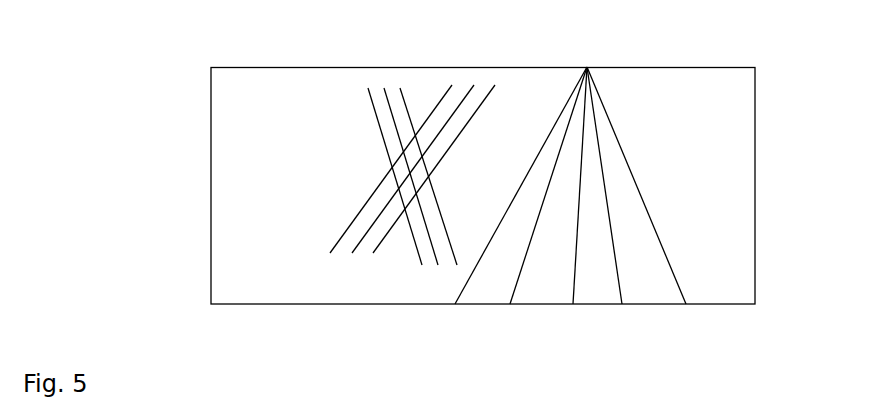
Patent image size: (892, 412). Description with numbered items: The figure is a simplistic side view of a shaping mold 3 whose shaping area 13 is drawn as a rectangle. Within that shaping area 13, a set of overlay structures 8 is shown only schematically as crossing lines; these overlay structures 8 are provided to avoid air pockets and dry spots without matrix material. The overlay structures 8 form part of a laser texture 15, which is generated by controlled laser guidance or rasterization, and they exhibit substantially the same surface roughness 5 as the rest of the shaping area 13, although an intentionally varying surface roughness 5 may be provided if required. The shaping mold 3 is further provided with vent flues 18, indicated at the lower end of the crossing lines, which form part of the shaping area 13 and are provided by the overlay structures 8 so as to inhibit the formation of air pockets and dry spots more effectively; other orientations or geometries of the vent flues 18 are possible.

The shaping mold 3 is at (211, 85).
The shaping area 13 is at (305, 146).
The surface roughness 5 is at (282, 216).
The laser texture 15 is at (307, 265).
The overlay structures 8 is at (358, 80).
The vent flues 18 is at (417, 251).